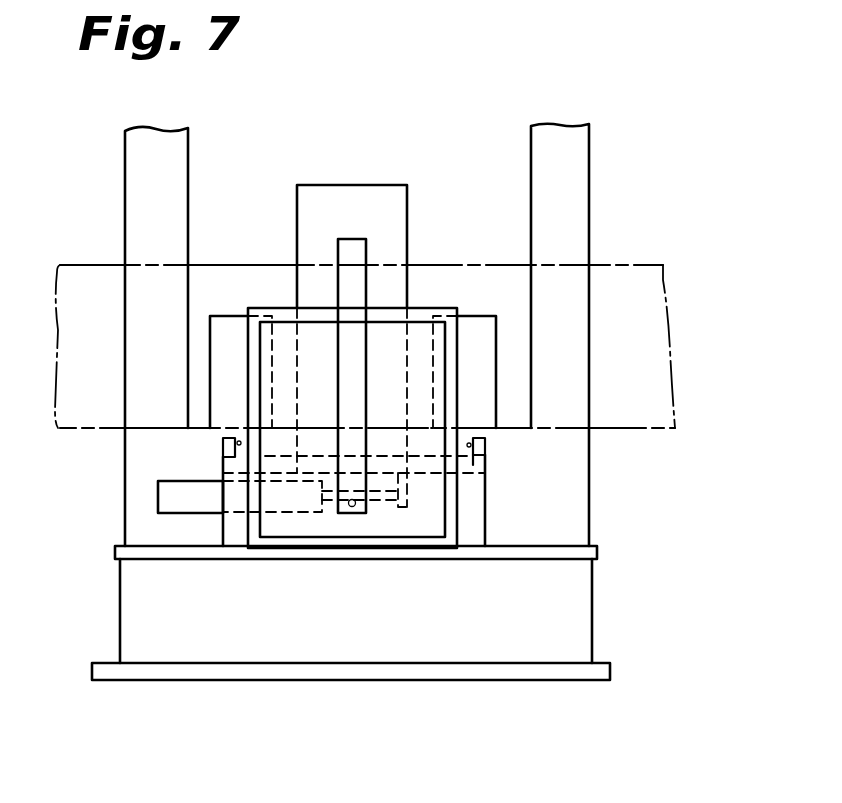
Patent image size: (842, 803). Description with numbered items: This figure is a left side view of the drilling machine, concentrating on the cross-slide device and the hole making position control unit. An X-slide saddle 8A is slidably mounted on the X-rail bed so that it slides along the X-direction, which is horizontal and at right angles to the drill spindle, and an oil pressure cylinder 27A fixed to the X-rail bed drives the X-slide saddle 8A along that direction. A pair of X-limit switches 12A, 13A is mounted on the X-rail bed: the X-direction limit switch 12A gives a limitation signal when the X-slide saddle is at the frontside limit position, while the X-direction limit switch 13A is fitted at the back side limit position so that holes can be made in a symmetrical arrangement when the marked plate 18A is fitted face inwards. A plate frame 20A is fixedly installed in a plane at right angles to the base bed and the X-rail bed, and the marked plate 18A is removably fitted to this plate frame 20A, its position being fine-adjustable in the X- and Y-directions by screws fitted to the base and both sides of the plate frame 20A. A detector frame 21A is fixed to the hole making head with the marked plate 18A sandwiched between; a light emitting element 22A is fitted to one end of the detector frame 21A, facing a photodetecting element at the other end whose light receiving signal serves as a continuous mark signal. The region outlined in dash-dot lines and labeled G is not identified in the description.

The ground / datum region G is at (633, 288).
The detector frame 21A is at (347, 267).
The marked plate 18A is at (283, 367).
The plate frame 20A is at (255, 390).
The X-direction limit switch 12A is at (223, 444).
The X-direction limit switch 13A is at (485, 445).
The X-slide saddle 8A is at (473, 465).
The oil pressure cylinder 27A is at (175, 497).
The light emitting element 22A is at (350, 508).